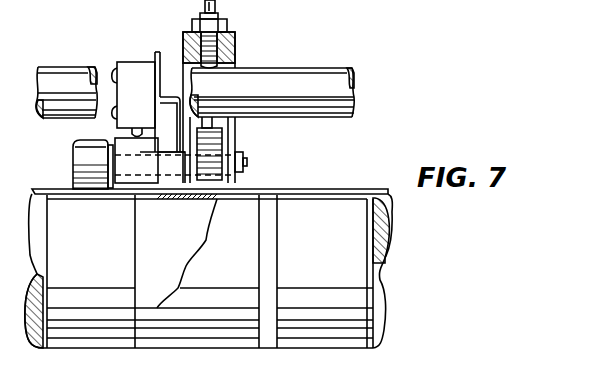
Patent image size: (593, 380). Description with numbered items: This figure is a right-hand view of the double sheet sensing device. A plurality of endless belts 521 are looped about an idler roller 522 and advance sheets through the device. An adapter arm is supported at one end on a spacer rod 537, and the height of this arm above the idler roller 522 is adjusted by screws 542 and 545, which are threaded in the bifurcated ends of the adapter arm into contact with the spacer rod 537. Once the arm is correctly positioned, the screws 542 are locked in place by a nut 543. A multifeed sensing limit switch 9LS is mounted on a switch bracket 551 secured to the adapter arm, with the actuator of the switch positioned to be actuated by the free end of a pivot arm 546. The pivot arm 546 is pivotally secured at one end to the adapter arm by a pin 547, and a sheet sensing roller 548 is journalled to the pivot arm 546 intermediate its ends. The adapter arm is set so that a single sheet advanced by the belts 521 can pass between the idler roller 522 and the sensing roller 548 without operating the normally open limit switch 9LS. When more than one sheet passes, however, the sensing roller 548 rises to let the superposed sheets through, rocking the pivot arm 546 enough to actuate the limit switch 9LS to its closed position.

The endless belts 521 is at (355, 350).
The idler roller 522 is at (380, 298).
The spacer rod 537 is at (303, 68).
The screws 542 is at (212, 13).
The nut 543 is at (228, 25).
The screws 545 is at (233, 125).
The pivot arm 546 is at (125, 138).
The pin 547 is at (247, 162).
The sheet sensing roller 548 is at (78, 150).
The switch bracket 551 is at (164, 52).
The multifeed sensing limit switch 9LS is at (117, 66).